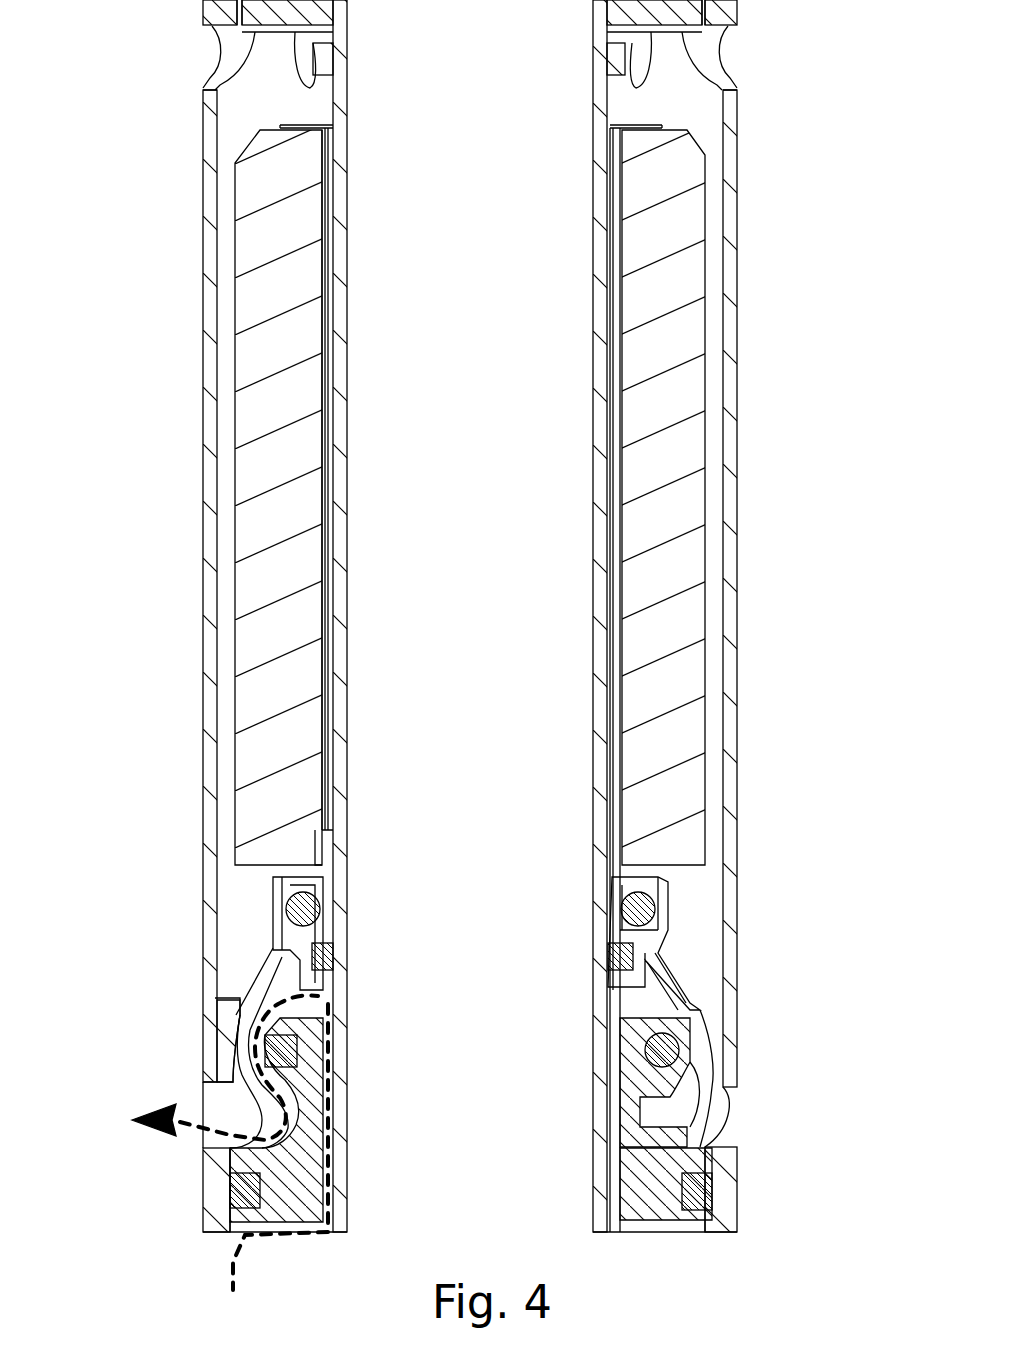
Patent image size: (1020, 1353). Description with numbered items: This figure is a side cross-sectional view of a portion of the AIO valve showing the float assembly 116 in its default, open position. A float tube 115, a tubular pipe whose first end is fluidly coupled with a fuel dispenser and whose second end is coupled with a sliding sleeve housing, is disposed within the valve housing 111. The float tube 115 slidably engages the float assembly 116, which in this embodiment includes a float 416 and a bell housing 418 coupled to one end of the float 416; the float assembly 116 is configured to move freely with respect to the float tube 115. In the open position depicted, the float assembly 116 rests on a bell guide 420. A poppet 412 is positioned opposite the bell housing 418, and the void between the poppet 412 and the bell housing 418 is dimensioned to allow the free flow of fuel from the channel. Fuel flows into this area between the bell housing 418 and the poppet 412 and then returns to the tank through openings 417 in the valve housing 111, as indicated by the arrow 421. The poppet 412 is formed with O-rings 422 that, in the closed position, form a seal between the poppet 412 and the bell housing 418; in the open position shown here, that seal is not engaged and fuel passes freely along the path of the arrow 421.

The valve housing 111 is at (733, 285).
The float tube 115 is at (610, 282).
The float assembly 116 is at (148, 97).
The poppet 412 is at (680, 1025).
The float 416 is at (672, 540).
The openings 417 is at (707, 1132).
The bell housing 418 is at (660, 935).
The bell guide 420 is at (625, 895).
The arrow 421 is at (165, 1130).
The O-rings 422 is at (680, 1050).